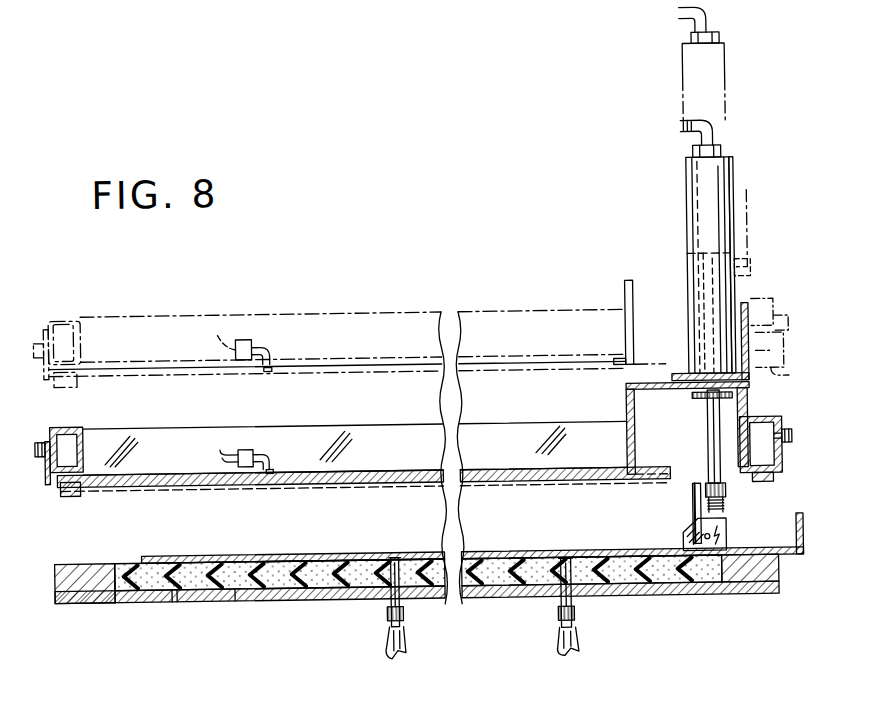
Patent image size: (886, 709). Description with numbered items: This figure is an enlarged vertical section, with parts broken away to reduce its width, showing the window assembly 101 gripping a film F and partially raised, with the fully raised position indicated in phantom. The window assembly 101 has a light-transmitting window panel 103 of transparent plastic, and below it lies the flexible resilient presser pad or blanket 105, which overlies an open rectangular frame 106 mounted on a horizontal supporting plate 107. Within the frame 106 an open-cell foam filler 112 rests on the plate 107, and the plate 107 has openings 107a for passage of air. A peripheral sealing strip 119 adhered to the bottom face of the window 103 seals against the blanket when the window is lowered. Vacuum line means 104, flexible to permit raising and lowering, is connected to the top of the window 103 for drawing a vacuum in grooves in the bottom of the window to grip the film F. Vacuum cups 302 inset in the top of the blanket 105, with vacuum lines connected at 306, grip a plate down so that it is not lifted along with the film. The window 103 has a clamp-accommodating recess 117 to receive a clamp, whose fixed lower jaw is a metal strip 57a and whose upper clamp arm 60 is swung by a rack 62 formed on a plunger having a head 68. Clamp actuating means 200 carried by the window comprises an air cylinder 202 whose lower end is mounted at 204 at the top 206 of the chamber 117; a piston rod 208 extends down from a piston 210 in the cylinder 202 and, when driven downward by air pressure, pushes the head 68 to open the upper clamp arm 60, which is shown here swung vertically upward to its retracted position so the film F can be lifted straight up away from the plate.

The clamp actuating means 200 is at (696, 194).
The air cylinder 202 is at (688, 210).
The piston 210 is at (697, 263).
The top of clamp-accommodating chamber 206 is at (653, 386).
The cylinder mounting 204 is at (703, 401).
The piston rod 208 is at (712, 449).
The upper clamp arm 60 is at (690, 496).
The rack 62 is at (682, 537).
The head 68 is at (722, 505).
The peripheral sealing strip 119 is at (757, 479).
The clamp-accommodating recess 117 is at (626, 396).
The window panel 103 is at (485, 467).
The window assembly 101 is at (352, 437).
The vacuum line means 104 is at (233, 357).
The open rectangular frame 106 is at (272, 352).
The presser pad or blanket 105 is at (430, 598).
The open-cell foam filler 112 is at (183, 601).
The opening 107a is at (350, 598).
The horizontal supporting plate 107 is at (682, 599).
The vacuum cup 302 is at (400, 522).
The vacuum line connection 306 is at (563, 647).
The metal strip 57a is at (670, 560).
The film F is at (517, 371).